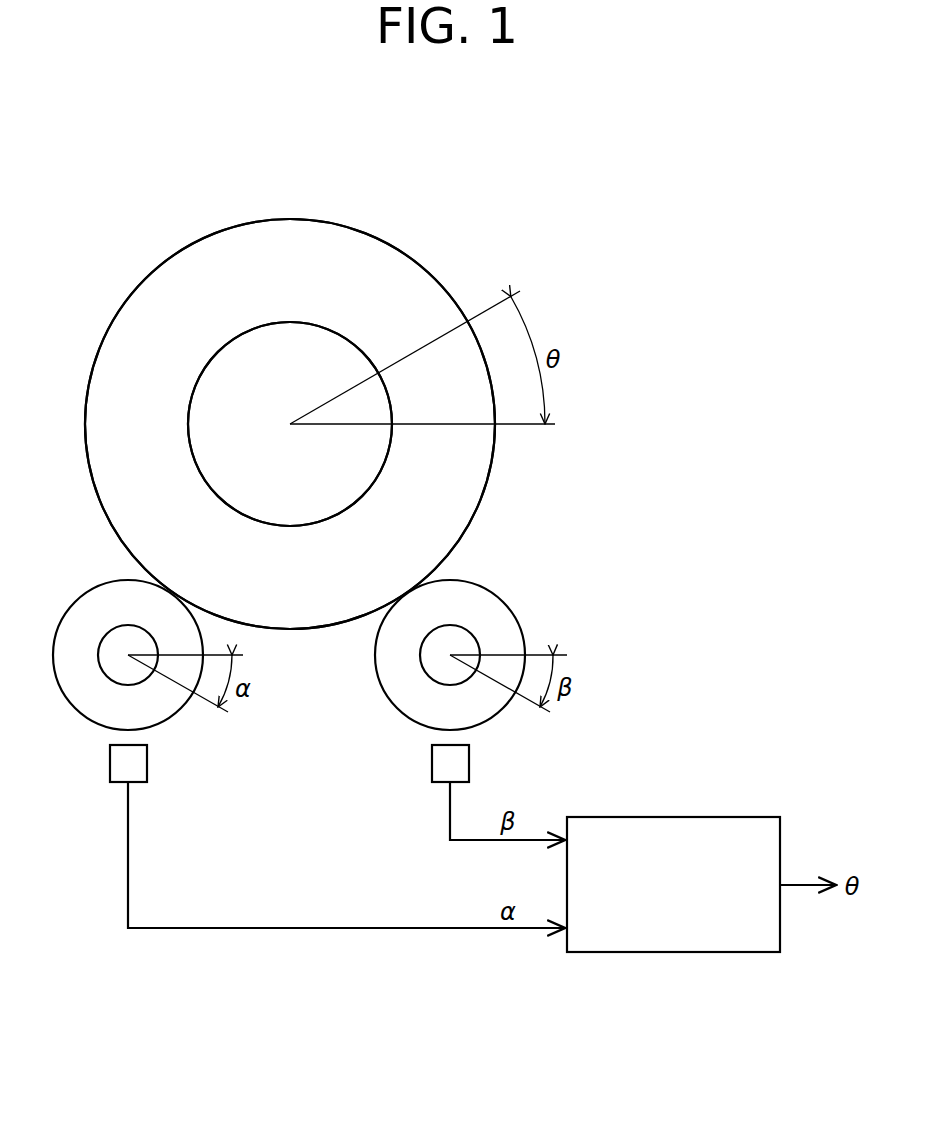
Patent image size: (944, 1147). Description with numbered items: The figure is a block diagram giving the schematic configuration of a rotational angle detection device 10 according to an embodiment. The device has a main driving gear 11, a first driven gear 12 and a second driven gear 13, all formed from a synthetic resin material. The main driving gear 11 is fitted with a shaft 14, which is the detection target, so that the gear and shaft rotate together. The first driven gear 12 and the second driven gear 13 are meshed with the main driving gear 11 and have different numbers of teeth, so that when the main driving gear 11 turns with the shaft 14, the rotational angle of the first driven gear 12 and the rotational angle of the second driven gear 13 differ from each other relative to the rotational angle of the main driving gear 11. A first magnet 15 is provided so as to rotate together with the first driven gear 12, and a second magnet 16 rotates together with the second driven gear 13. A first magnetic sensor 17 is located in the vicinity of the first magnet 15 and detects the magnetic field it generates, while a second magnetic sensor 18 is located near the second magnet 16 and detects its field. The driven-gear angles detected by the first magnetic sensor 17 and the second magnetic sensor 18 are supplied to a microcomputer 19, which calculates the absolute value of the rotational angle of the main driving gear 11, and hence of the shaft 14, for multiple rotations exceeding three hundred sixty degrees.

The rotational angle detection device 10 is at (110, 254).
The main driving gear 11 is at (290, 226).
The first driven gear 12 is at (96, 598).
The second driven gear 13 is at (496, 606).
The shaft 14 is at (290, 330).
The first magnet 15 is at (112, 667).
The second magnet 16 is at (434, 667).
The first magnetic sensor 17 is at (110, 762).
The second magnetic sensor 18 is at (432, 762).
The microcomputer 19 is at (672, 817).